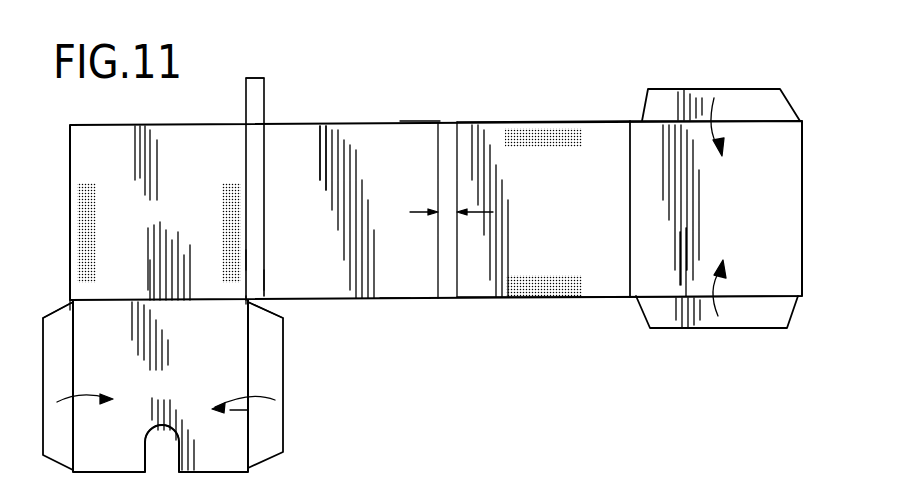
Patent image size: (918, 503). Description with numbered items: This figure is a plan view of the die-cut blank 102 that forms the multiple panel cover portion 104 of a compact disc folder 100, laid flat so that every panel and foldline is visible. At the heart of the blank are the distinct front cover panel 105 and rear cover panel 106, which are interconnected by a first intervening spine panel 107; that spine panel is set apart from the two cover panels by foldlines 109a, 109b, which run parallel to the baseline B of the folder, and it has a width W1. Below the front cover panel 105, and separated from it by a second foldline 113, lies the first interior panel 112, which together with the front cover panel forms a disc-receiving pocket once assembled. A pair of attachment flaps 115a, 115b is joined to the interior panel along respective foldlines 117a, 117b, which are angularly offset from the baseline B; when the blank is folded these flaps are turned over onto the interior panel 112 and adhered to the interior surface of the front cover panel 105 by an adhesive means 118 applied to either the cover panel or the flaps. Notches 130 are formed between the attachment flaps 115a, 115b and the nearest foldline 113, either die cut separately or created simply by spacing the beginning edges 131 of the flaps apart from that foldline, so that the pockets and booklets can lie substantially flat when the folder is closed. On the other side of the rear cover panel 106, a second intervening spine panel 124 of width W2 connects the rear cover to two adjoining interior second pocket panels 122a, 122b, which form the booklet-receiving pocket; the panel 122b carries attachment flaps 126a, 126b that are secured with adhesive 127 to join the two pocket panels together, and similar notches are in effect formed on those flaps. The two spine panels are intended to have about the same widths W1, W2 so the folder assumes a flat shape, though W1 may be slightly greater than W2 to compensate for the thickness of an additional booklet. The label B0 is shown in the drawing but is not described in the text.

The compact disc folder 100 is at (175, 114).
The blank 102 is at (354, 110).
The cover portion 104 is at (421, 122).
The front cover panel 105 is at (172, 223).
The rear cover panel 106 is at (340, 211).
The first intervening spine panel 107 is at (252, 152).
The foldline 109a is at (247, 258).
The foldline 109b is at (267, 280).
The first interior panel 112 is at (181, 399).
The second foldline 113 is at (163, 298).
The attachment flap 115a is at (50, 386).
The attachment flap 115b is at (262, 418).
The foldline 117a is at (118, 443).
The foldline 117b is at (250, 368).
The adhesive means 118 is at (95, 210).
The interior second pocket panel 122a is at (568, 226).
The interior second pocket panel 122b is at (732, 224).
The second intervening spine panel 124 is at (445, 150).
The attachment flap 126a is at (672, 102).
The attachment flap 126b is at (690, 310).
The adhesive 127 is at (537, 127).
The notches 130 is at (633, 120).
The beginning edges 131 is at (57, 318).
The width of first spine panel W1 is at (251, 78).
The width of second spine panel W2 is at (425, 218).
The baseline B is at (392, 302).
The bottom edge of panel B0 is at (71, 300).